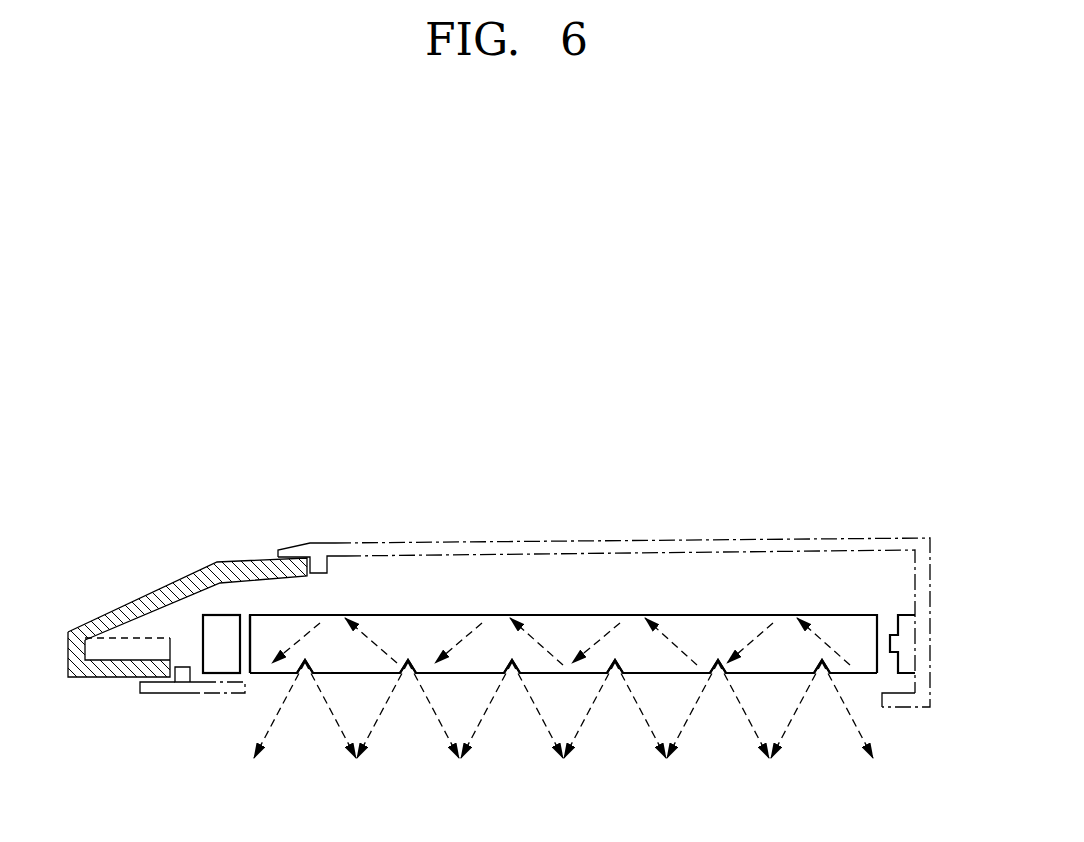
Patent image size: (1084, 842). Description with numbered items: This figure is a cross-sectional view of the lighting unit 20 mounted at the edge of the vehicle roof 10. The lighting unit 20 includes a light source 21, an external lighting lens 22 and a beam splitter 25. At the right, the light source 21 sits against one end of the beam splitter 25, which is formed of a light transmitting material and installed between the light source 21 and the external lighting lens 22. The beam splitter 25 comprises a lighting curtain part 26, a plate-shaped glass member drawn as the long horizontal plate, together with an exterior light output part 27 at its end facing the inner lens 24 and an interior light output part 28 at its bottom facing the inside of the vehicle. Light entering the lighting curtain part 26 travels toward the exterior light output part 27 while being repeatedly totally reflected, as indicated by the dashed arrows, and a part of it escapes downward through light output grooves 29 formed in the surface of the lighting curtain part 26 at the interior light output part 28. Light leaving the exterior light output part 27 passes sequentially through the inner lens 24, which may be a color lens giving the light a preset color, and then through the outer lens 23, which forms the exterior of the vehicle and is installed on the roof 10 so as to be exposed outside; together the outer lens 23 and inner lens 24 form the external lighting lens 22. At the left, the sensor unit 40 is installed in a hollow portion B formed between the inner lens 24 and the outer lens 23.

The roof 10 is at (378, 543).
The lighting unit 20 is at (559, 634).
The light source 21 is at (893, 638).
The external lighting lens 22 is at (187, 547).
The outer lens 23 is at (165, 595).
The inner lens 24 is at (223, 623).
The beam splitter 25 is at (712, 614).
The lighting curtain part 26 is at (572, 623).
The exterior light output part 27 is at (250, 628).
The interior light output part 28 is at (662, 676).
The light output grooves 29 is at (722, 677).
The sensor unit 40 is at (118, 643).
The hollow portion B is at (137, 643).